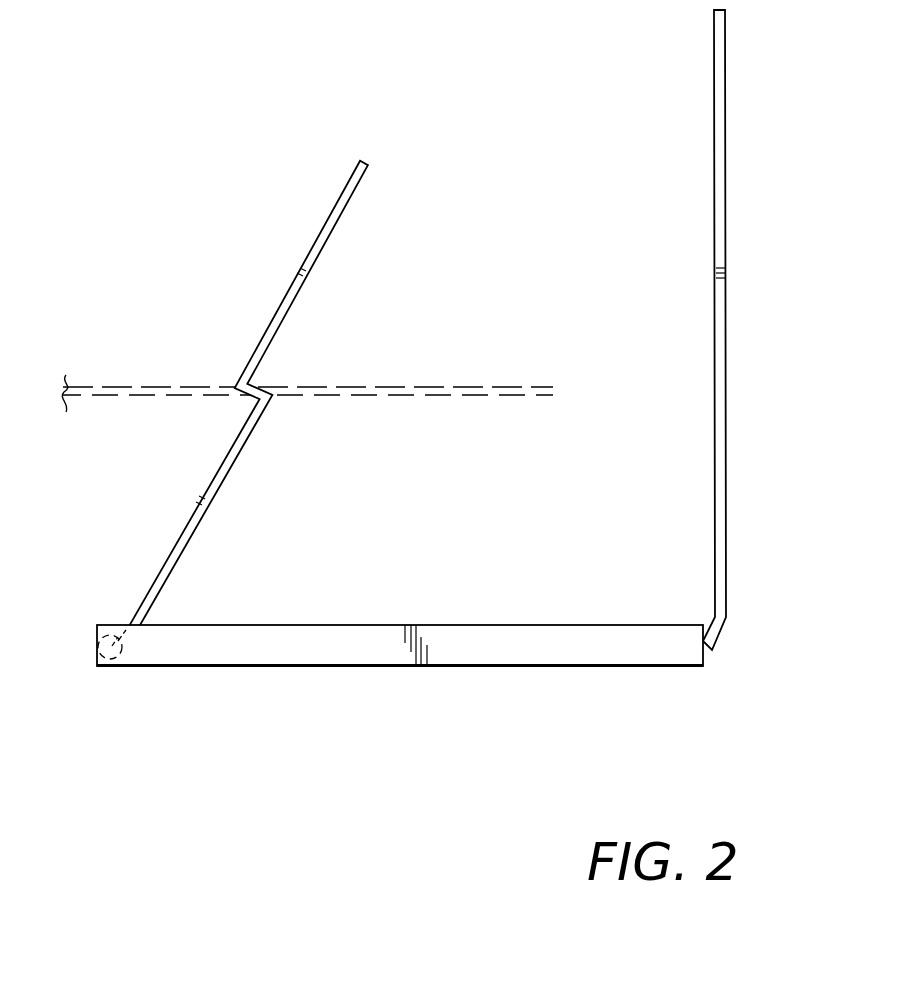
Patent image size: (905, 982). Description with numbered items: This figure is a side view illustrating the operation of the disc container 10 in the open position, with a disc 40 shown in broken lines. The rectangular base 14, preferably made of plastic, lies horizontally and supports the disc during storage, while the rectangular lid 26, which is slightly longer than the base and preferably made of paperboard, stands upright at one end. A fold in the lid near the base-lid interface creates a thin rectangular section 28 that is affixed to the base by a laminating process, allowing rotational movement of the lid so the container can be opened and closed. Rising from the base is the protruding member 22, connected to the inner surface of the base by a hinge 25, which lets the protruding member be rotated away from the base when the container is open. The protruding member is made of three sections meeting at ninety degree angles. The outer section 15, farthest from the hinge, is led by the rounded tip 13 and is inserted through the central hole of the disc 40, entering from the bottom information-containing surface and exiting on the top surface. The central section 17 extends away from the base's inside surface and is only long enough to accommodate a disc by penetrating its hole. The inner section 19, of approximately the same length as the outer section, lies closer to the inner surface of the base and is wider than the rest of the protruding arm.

The disc container 10 is at (462, 403).
The rounded tip of the protruding member 13 is at (365, 162).
The rectangular base 14 is at (400, 710).
The outer section 15 is at (277, 356).
The central section 17 is at (245, 398).
The inner section 19 is at (247, 396).
The protruding member 22 is at (238, 310).
The hinge 25 is at (112, 650).
The rectangular lid 26 is at (724, 140).
The thin rectangular section 28 is at (712, 645).
The disc 40 is at (150, 387).